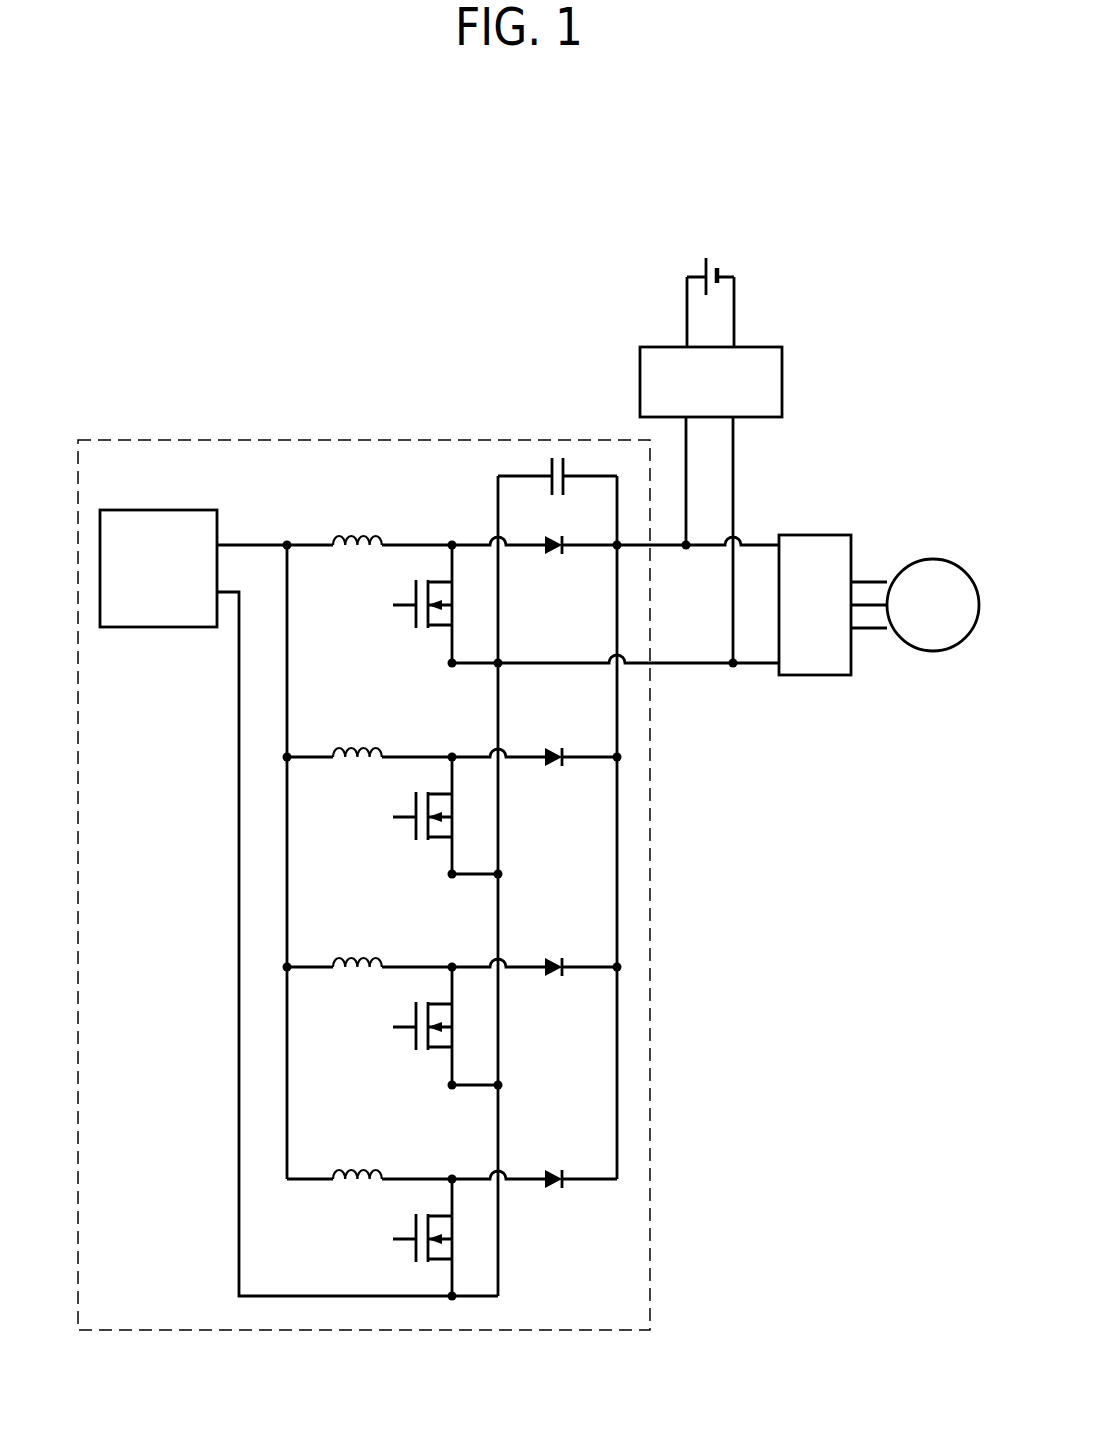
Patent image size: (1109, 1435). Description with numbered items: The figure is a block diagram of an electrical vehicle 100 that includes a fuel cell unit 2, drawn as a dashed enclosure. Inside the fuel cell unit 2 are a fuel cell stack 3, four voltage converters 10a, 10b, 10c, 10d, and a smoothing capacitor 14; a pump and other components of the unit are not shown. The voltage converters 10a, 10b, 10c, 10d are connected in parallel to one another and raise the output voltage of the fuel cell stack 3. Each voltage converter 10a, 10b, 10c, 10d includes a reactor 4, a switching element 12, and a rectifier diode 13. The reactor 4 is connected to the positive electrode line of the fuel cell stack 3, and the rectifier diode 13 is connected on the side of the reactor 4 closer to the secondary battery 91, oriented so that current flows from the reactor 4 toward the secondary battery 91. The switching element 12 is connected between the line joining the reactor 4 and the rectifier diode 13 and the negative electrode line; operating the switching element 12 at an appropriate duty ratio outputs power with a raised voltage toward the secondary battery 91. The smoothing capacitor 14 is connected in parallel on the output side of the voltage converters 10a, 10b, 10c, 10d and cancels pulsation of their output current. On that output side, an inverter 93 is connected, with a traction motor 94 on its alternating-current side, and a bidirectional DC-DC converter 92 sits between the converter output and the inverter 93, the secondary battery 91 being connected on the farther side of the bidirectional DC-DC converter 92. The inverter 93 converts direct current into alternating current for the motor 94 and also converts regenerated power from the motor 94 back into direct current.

The electrical vehicle 100 is at (852, 192).
The fuel cell unit 2 is at (148, 437).
The fuel cell stack 3 is at (158, 628).
The reactor 4 is at (340, 551).
The voltage converter 10a is at (415, 652).
The voltage converter 10b is at (415, 864).
The voltage converter 10c is at (415, 1074).
The voltage converter 10d is at (425, 1273).
The switching element 12 is at (410, 616).
The rectifier diode 13 is at (555, 557).
The smoothing capacitor 14 is at (548, 466).
The secondary battery 91 is at (703, 265).
The bidirectional DC-DC converter 92 is at (782, 382).
The inverter 93 is at (813, 678).
The traction motor 94 is at (930, 655).